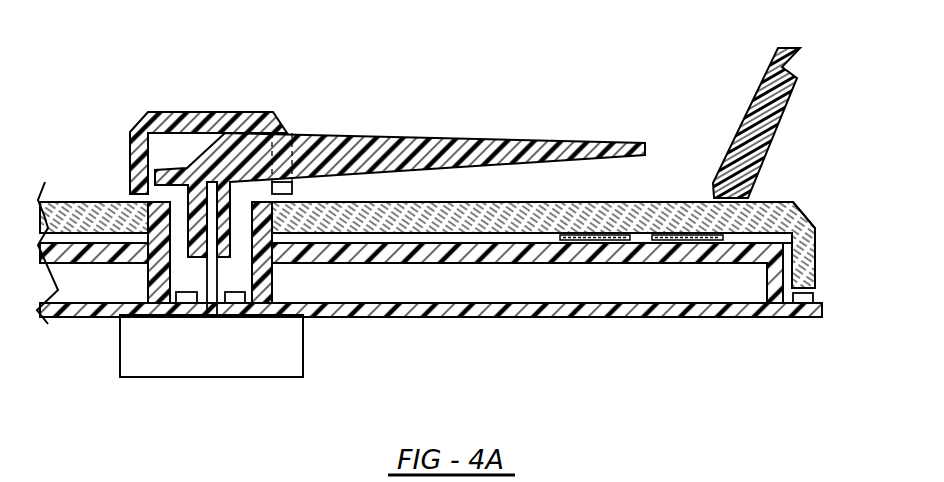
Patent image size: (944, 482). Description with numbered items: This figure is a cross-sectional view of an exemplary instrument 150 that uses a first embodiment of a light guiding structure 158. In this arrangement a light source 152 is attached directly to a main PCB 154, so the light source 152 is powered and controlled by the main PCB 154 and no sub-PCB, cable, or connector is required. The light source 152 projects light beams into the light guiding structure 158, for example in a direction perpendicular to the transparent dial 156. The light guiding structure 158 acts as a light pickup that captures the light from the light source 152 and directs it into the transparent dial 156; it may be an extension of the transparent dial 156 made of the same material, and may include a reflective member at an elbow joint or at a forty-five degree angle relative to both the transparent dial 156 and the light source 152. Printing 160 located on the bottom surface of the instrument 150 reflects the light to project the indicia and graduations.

The instrument 150 is at (199, 70).
The light source 152 is at (822, 300).
The main PCB 154 is at (748, 328).
The transparent dial 156 is at (600, 198).
The light guiding structure 158 is at (810, 208).
The printing 160 is at (596, 246).